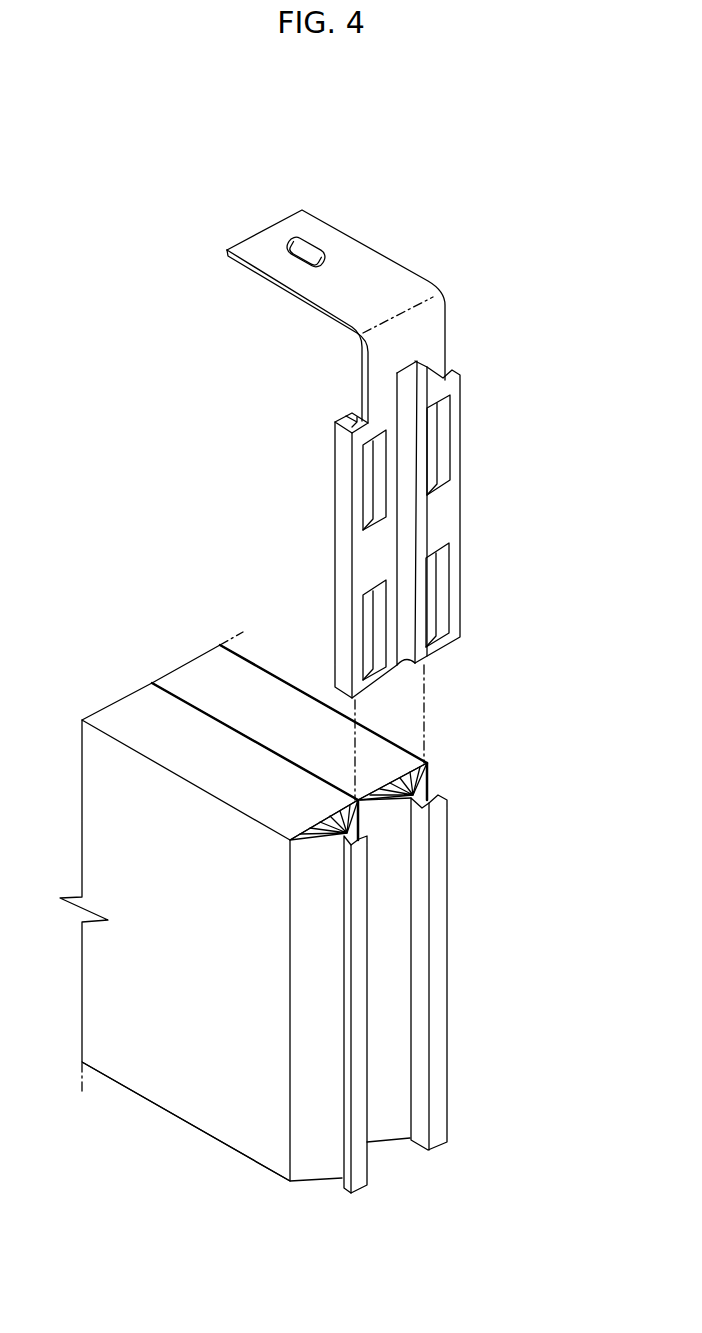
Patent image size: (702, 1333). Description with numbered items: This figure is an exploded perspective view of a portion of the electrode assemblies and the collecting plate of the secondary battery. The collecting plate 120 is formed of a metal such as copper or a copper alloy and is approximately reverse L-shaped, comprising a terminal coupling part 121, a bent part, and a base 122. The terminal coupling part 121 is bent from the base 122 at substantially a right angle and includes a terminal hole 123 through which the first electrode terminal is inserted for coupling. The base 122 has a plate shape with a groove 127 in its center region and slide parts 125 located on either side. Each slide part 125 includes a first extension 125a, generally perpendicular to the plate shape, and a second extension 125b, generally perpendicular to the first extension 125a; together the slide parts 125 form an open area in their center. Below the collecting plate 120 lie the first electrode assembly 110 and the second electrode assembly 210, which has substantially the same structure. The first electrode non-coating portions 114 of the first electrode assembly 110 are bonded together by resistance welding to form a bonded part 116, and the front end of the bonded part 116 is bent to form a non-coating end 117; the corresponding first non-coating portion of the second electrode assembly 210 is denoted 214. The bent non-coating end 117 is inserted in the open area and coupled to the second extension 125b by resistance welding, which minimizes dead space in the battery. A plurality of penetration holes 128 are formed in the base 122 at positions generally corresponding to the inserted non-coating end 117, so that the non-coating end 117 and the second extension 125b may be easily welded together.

The first electrode assembly 110 is at (123, 718).
The first electrode non-coating portion 114 is at (315, 1167).
The bonded part 116 is at (362, 834).
The non-coating end 117 is at (358, 845).
The collecting plate 120 is at (452, 268).
The terminal coupling part 121 is at (363, 267).
The base 122 is at (432, 354).
The terminal hole 123 is at (312, 245).
The slide part 125 is at (219, 355).
The first extension 125a is at (336, 426).
The second extension 125b is at (352, 415).
The groove 127 is at (405, 518).
The penetration hole 128 is at (372, 483).
The second electrode assembly 210 is at (203, 677).
The first non-coating portion of the second electrode assembly 214 is at (390, 1079).